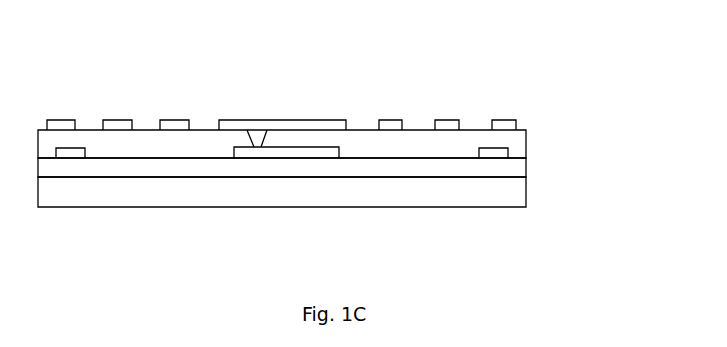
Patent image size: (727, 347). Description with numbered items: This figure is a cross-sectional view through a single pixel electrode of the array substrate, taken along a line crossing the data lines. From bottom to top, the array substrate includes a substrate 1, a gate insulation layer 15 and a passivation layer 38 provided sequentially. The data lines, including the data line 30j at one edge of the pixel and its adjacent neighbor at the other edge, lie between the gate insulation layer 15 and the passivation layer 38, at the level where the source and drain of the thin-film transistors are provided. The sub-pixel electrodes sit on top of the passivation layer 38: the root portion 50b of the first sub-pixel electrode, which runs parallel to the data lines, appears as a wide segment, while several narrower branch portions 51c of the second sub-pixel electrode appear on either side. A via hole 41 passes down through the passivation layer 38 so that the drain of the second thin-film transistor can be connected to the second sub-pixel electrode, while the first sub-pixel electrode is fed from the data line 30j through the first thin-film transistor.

The substrate 1 is at (478, 183).
The gate insulation layer 15 is at (495, 165).
The passivation layer 38 is at (495, 137).
The via hole 41 is at (252, 143).
The root portion 50b is at (300, 120).
The branch portions 51c is at (435, 120).
The data line 30j is at (66, 151).